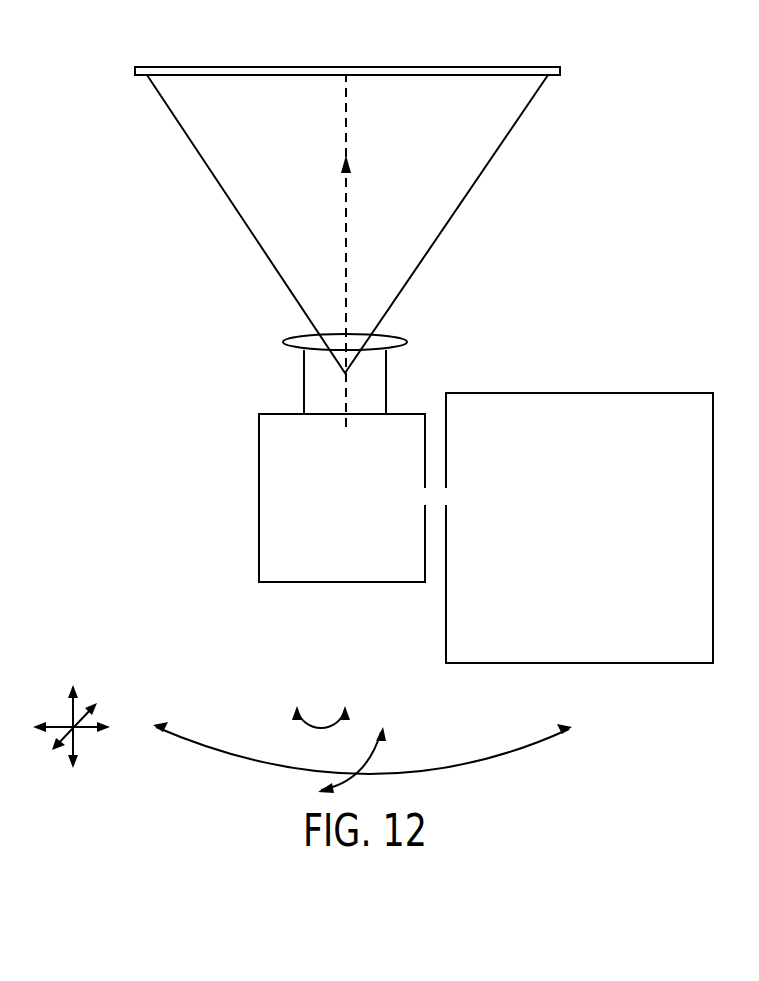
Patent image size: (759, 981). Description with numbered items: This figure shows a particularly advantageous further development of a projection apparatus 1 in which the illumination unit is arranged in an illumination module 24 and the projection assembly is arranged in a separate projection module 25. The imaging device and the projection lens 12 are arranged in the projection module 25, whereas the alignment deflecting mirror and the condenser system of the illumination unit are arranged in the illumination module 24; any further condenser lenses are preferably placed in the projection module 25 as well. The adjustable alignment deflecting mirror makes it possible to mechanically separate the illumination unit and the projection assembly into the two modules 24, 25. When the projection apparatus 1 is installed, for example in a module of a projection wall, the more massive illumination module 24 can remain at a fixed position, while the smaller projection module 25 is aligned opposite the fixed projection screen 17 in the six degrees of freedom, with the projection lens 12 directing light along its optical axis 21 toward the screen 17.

The projection apparatus 1 is at (640, 188).
The projection screen 17 is at (428, 75).
The optical axis 21 is at (348, 244).
The projection lens 12 is at (292, 338).
The projection module 25 is at (353, 512).
The illumination module 24 is at (588, 544).